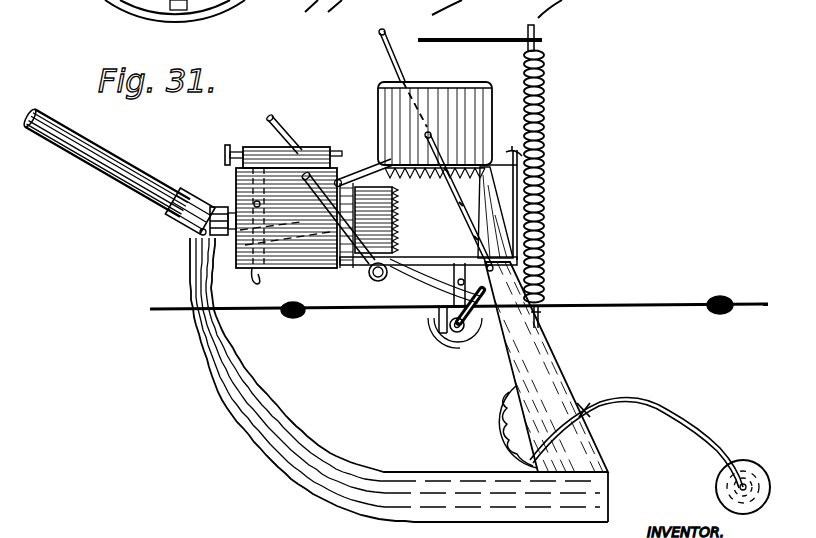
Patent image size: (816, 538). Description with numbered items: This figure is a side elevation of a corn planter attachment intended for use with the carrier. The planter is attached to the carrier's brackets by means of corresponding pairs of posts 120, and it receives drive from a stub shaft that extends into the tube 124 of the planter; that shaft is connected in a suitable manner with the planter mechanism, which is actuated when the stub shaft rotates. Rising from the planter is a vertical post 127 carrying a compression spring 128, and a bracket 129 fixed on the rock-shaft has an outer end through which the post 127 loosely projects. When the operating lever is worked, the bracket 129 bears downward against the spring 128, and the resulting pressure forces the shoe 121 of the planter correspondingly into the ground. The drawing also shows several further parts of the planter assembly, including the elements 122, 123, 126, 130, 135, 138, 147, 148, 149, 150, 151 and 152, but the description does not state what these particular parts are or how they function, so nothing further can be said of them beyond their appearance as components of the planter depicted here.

The post 120 is at (287, 130).
The shoe 121 is at (278, 413).
The gear 122 is at (422, 178).
The upright bracket 123 is at (476, 248).
The tube 124 is at (130, 166).
The link rod 126 is at (400, 65).
The vertical post 127 is at (548, 42).
The compression spring 128 is at (548, 98).
The bracket 129 is at (468, 37).
The wheel arm 130 is at (707, 424).
The coupling 135 is at (255, 203).
The worm gear 138 is at (399, 215).
The hook 147 is at (255, 270).
The horizontal rod 148 is at (348, 310).
The stop ball 149 is at (292, 318).
The link 150 is at (447, 333).
The cam 151 is at (485, 345).
The bracket 152 is at (437, 312).